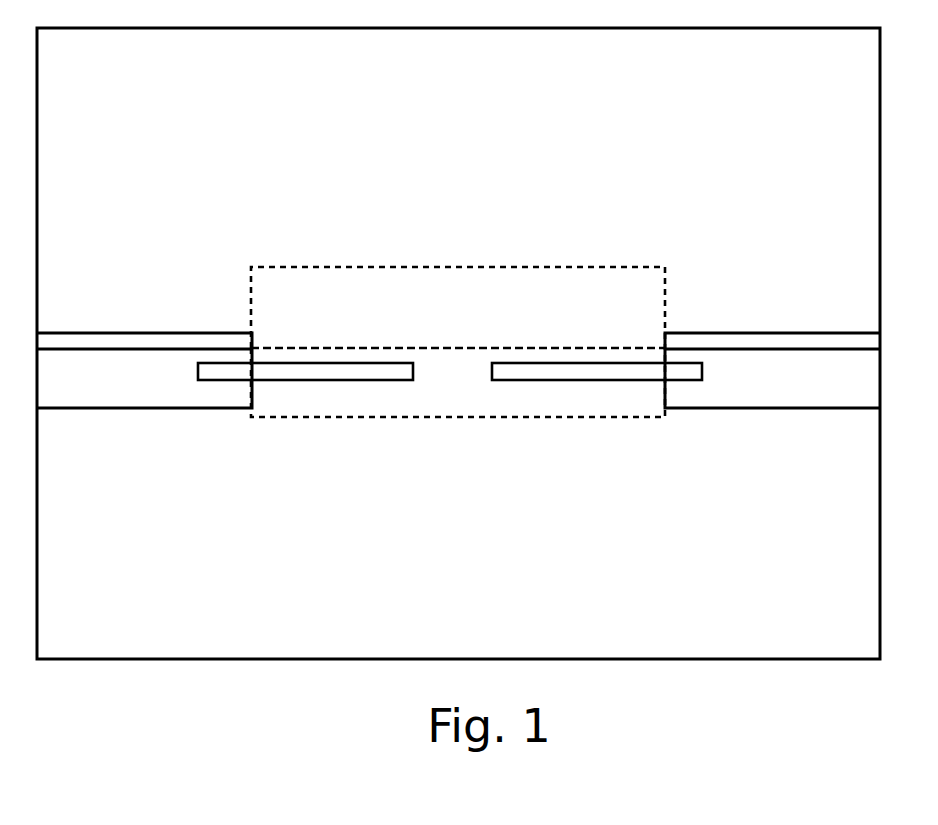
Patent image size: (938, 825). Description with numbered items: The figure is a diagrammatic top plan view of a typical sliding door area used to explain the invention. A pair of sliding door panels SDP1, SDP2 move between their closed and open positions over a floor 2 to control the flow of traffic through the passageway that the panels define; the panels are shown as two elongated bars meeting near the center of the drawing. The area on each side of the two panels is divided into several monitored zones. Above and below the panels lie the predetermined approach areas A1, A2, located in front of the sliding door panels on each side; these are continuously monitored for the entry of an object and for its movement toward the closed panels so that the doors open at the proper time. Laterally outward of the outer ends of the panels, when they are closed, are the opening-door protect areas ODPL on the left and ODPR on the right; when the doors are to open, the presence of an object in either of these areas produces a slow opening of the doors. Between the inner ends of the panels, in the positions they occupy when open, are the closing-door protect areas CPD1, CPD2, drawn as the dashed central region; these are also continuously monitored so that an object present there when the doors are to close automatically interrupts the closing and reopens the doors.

The floor 2 is at (731, 646).
The approach area A1 is at (458, 633).
The approach area A2 is at (458, 63).
The opening-door protect area (left) ODPL is at (144, 370).
The opening-door protect area (right) ODPR is at (772, 370).
The closing-door protect area CPD1 is at (458, 382).
The closing-door protect area CPD2 is at (458, 307).
The sliding door panel SDP1 is at (335, 370).
The sliding door panel SDP2 is at (575, 368).